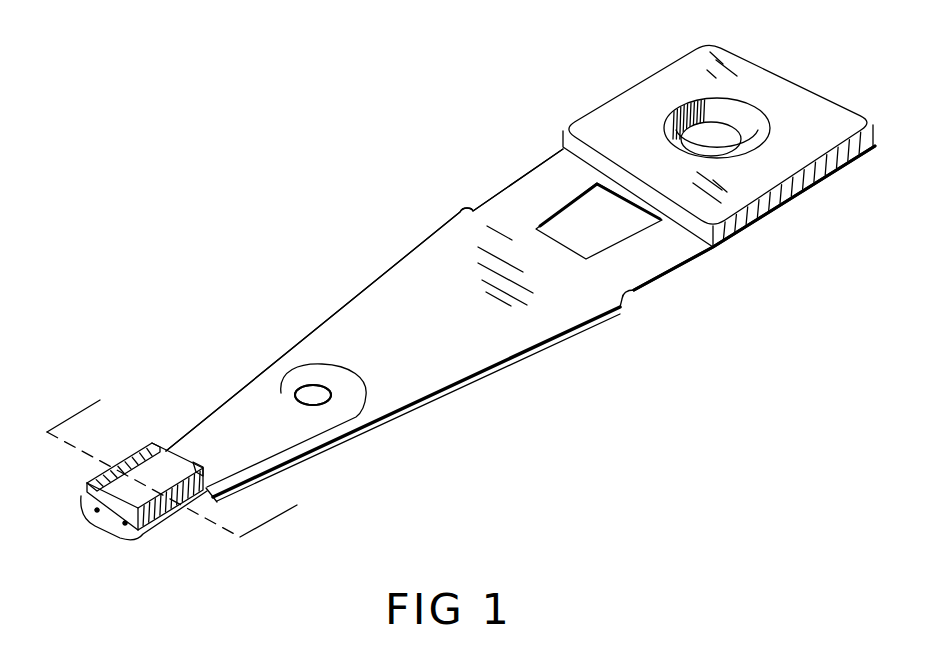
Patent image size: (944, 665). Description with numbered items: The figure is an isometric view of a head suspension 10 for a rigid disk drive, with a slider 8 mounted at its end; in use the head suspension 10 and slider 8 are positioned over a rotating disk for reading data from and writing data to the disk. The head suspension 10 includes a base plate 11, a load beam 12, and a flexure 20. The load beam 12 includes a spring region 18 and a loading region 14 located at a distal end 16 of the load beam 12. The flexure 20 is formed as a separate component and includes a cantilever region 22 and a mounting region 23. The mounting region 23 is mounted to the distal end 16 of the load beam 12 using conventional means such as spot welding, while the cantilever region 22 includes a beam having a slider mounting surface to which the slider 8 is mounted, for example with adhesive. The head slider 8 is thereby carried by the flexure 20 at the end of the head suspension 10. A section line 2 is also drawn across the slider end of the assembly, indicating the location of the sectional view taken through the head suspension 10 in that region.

The section line 2- 2 is at (183, 454).
The slider 8 is at (87, 489).
The head suspension 10 is at (441, 124).
The base plate 11 is at (790, 100).
The load beam 12 is at (560, 312).
The loading region 14 is at (207, 492).
The distal end 16 is at (200, 427).
The spring region 18 is at (658, 255).
The flexure 20 is at (262, 407).
The cantilever region 22 is at (108, 509).
The mounting region 23 is at (278, 425).